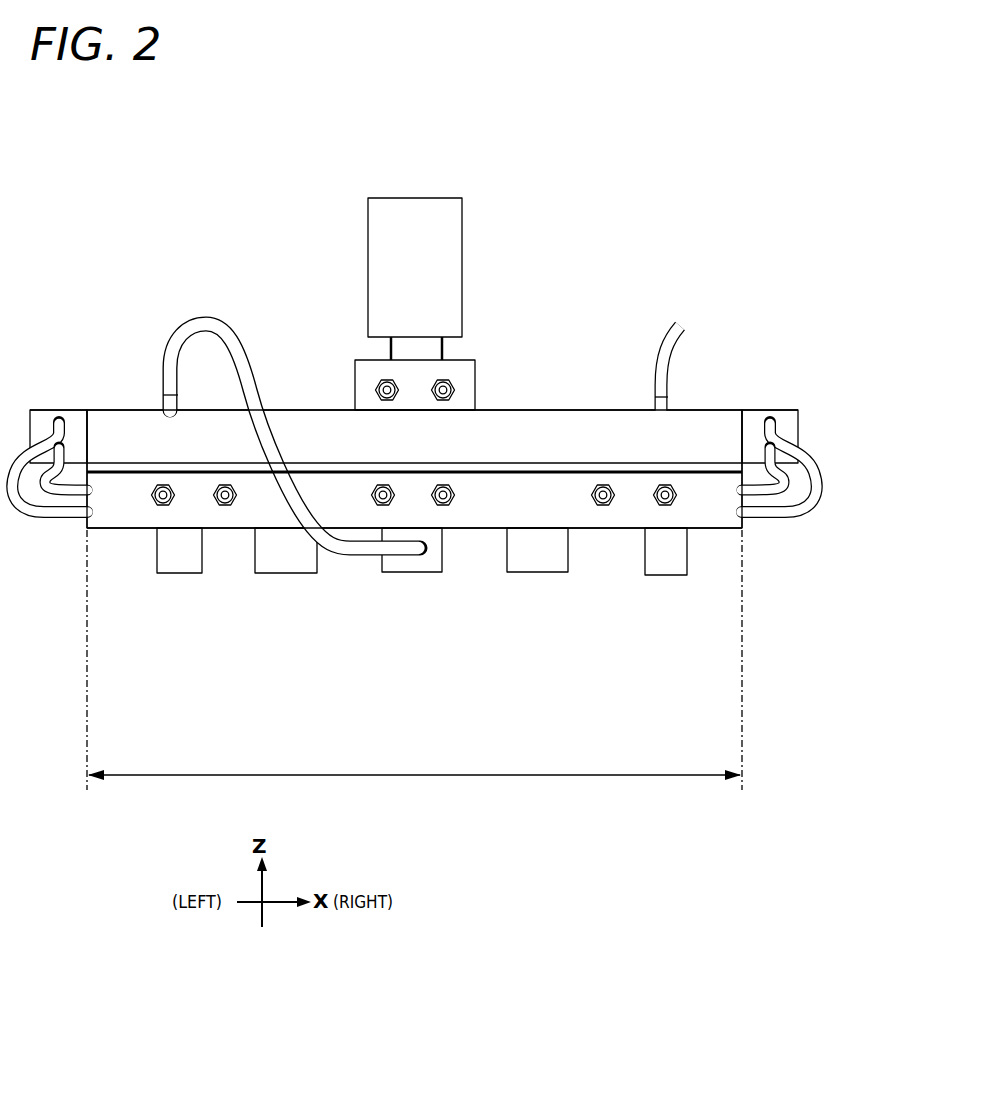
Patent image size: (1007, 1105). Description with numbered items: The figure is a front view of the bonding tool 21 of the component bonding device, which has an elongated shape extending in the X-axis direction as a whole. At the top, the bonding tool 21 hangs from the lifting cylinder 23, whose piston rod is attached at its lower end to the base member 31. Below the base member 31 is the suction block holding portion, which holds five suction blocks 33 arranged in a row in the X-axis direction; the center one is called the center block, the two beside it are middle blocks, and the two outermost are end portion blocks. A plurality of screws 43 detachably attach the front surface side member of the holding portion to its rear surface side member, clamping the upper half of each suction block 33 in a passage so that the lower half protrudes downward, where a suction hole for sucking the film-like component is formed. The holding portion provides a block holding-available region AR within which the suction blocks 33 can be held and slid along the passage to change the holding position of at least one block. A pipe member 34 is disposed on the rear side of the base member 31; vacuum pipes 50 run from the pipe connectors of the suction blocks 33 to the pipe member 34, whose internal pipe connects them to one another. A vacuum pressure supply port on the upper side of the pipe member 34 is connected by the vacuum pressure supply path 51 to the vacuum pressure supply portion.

The bonding tool 21 is at (607, 258).
The lifting cylinder 23 is at (455, 265).
The base member 31 is at (542, 423).
The suction block 33 is at (537, 572).
The pipe member 34 is at (75, 420).
The screw 43 is at (414, 566).
The vacuum pipe 50 is at (188, 325).
The vacuum pressure supply path 51 is at (673, 353).
The block holding-available region AR is at (414, 671).